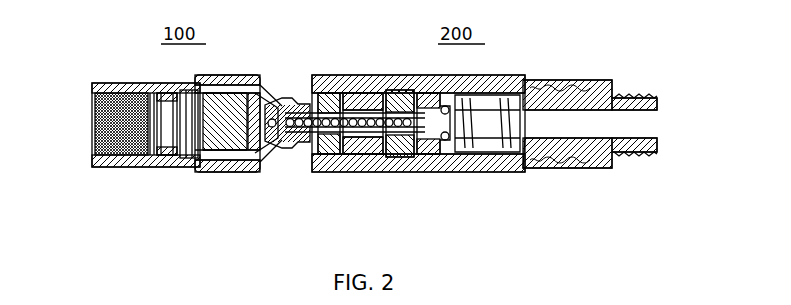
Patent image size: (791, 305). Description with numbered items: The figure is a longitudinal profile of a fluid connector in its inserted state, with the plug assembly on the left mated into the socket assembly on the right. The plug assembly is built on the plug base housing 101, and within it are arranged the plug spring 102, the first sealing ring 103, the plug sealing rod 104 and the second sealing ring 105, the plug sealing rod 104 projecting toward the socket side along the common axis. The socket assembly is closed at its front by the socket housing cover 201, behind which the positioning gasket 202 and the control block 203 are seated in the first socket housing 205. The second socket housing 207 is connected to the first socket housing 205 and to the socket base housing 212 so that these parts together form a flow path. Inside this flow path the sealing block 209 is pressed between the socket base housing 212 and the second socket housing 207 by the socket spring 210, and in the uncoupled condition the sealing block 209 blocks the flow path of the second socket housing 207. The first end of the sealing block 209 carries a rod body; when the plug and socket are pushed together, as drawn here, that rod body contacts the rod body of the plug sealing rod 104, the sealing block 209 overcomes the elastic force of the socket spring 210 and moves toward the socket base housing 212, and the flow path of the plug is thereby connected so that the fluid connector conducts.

The plug base housing 101 is at (131, 168).
The plug spring 102 is at (176, 168).
The first sealing ring 103 is at (244, 169).
The plug sealing rod 104 is at (209, 169).
The second sealing ring 105 is at (273, 168).
The socket housing cover 201 is at (317, 172).
The positioning gasket 202 is at (354, 172).
The control block 203 is at (400, 172).
The first socket housing 205 is at (433, 172).
The second socket housing 207 is at (494, 167).
The sealing block 209 is at (467, 160).
The socket spring 210 is at (524, 167).
The socket base housing 212 is at (594, 163).